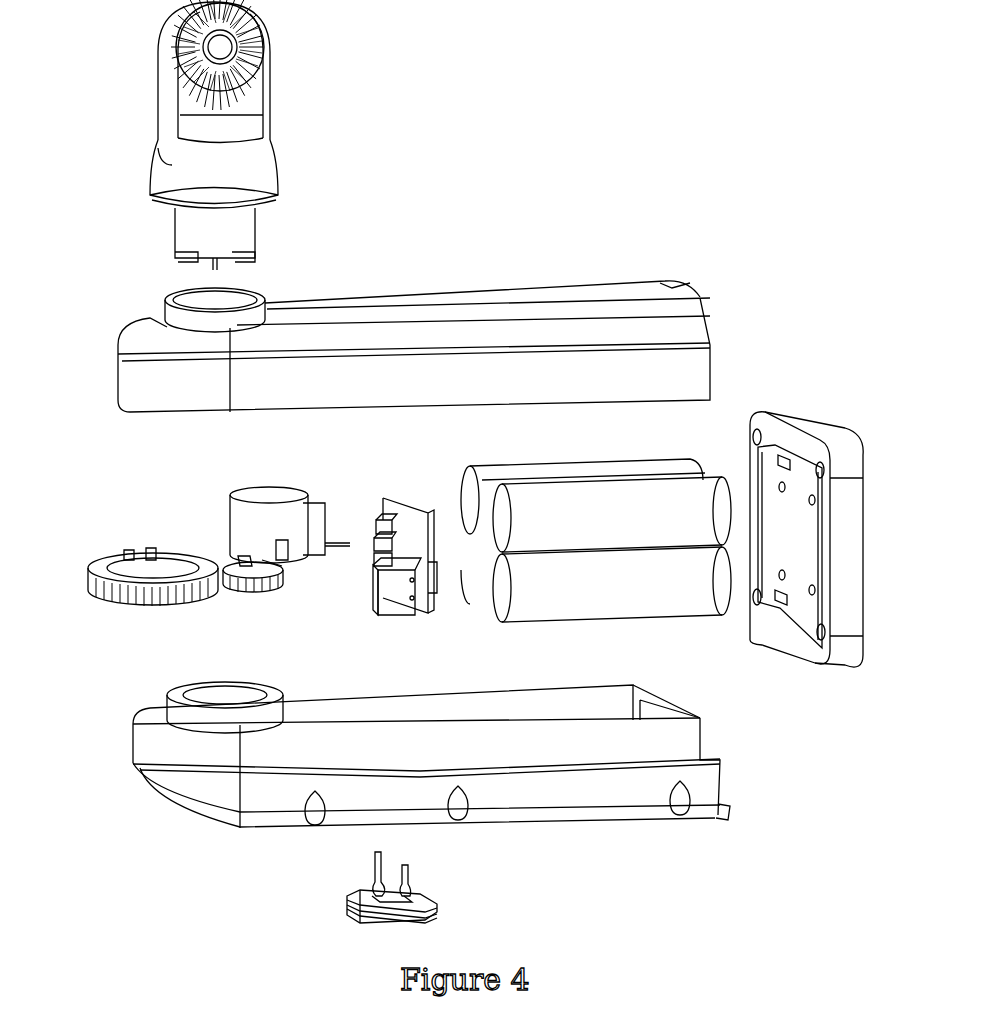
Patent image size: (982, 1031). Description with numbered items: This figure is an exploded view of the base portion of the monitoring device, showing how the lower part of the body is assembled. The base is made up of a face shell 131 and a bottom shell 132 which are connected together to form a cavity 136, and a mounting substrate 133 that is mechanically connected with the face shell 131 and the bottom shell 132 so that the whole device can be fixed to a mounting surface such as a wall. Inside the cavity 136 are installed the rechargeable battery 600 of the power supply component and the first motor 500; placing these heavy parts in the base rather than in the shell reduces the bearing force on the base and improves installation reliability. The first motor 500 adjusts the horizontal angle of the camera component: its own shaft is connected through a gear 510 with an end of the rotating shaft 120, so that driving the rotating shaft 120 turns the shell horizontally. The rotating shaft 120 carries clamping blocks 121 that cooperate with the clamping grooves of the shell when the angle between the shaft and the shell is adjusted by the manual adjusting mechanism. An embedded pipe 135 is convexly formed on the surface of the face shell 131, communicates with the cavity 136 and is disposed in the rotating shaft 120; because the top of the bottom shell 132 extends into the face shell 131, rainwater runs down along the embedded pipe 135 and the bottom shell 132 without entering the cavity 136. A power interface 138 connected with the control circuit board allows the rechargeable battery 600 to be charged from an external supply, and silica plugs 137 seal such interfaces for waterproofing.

The rotating shaft 120 is at (230, 177).
The clamping blocks 121 is at (267, 53).
The face shell 131 is at (150, 377).
The bottom shell 132 is at (168, 795).
The mounting substrate 133 is at (760, 463).
The embedded pipe 135 is at (178, 315).
The cavity 136 is at (573, 708).
The silica plugs 137 is at (350, 897).
The power interface 138 is at (397, 582).
The first motor 500 is at (250, 527).
The gear 510 is at (97, 568).
The rechargeable battery 600 is at (468, 493).